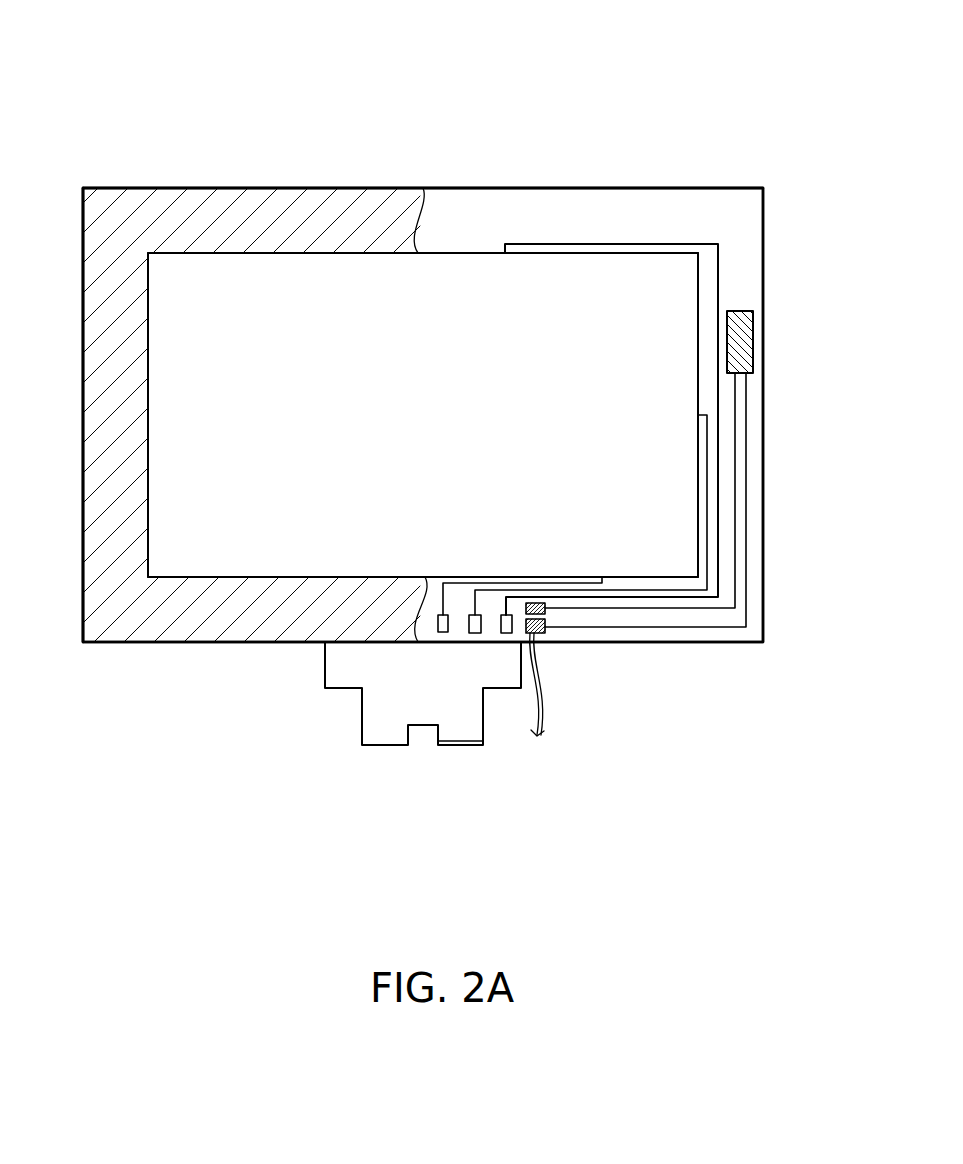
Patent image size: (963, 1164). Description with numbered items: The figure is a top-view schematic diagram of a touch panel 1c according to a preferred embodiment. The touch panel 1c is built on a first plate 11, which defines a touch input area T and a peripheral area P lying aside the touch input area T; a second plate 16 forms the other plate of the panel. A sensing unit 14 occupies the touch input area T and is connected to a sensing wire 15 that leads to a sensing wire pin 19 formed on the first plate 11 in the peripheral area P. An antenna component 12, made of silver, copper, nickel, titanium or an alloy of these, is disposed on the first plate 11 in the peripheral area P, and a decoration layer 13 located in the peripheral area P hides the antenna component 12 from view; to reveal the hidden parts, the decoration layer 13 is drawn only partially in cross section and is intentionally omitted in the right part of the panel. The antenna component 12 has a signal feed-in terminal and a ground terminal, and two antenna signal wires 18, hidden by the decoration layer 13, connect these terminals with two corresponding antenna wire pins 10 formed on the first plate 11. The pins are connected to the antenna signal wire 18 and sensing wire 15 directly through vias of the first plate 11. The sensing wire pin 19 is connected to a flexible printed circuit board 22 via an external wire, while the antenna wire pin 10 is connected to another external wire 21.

The touch panel 1c is at (112, 84).
The touch input area T is at (238, 295).
The peripheral area P is at (670, 202).
The first plate 11 is at (764, 230).
The antenna component 12 is at (751, 343).
The decoration layer 13 is at (287, 212).
The sensing unit 14 is at (463, 272).
The sensing wire 15 is at (600, 243).
The second plate 16 is at (90, 405).
The antenna signal wire 18 is at (752, 441).
The antenna wire pin 10 is at (545, 633).
The sensing wire pin 19 is at (443, 633).
The external wire 21 is at (548, 712).
The flexible printed circuit board 22 is at (460, 735).